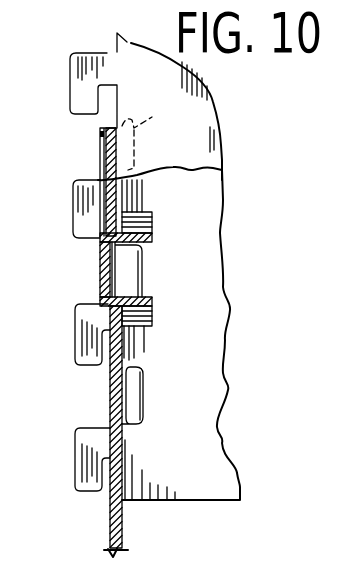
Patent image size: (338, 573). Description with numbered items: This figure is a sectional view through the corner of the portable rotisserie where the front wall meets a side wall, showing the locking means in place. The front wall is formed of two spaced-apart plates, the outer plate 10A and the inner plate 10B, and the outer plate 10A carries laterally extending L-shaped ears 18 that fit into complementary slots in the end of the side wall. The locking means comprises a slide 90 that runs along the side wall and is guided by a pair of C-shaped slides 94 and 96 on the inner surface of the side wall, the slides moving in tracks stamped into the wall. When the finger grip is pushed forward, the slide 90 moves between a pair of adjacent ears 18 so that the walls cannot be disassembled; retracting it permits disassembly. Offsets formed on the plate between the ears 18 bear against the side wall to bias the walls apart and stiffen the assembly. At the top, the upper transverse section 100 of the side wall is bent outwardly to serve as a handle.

The outer plate 10A is at (218, 294).
The inner plate 10B is at (208, 133).
The L-shaped ears 18 is at (78, 97).
The slide 90 is at (90, 262).
The C-shaped slide 94 is at (140, 220).
The C-shaped slide 96 is at (145, 325).
The upper transverse section 100 is at (159, 134).